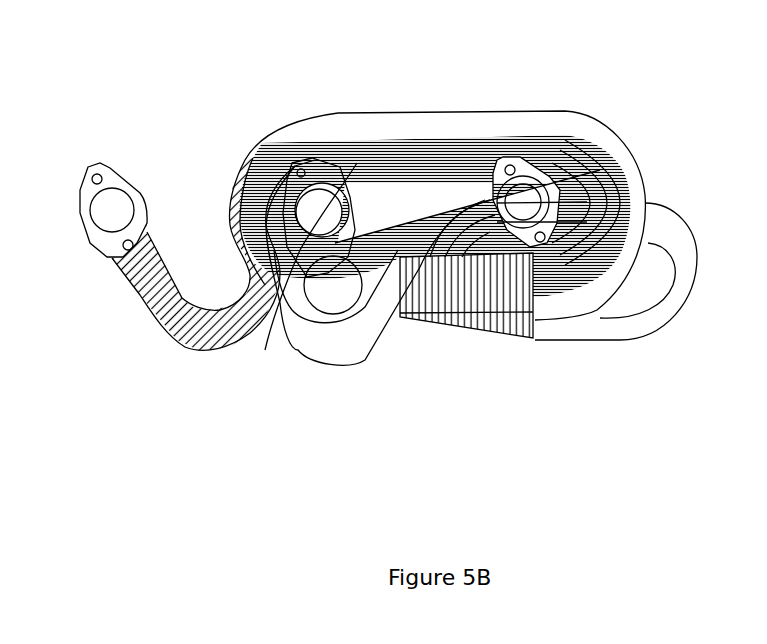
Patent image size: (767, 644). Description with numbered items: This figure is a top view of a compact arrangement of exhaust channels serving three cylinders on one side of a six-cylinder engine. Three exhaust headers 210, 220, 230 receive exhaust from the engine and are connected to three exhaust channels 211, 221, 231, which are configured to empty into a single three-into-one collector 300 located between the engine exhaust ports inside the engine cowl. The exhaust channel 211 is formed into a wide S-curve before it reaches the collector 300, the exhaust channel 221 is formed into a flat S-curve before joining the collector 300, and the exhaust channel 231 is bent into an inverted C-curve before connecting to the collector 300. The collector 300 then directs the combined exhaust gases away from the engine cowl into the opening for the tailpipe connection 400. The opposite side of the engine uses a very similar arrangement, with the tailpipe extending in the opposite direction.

The exhaust header 210 is at (82, 213).
The exhaust channel 211 is at (200, 351).
The exhaust header 220 is at (357, 163).
The exhaust channel 221 is at (380, 347).
The exhaust header 230 is at (620, 168).
The exhaust channel 231 is at (573, 132).
The 3-into-1 collector 300 is at (513, 330).
The tailpipe connection 400 is at (333, 300).